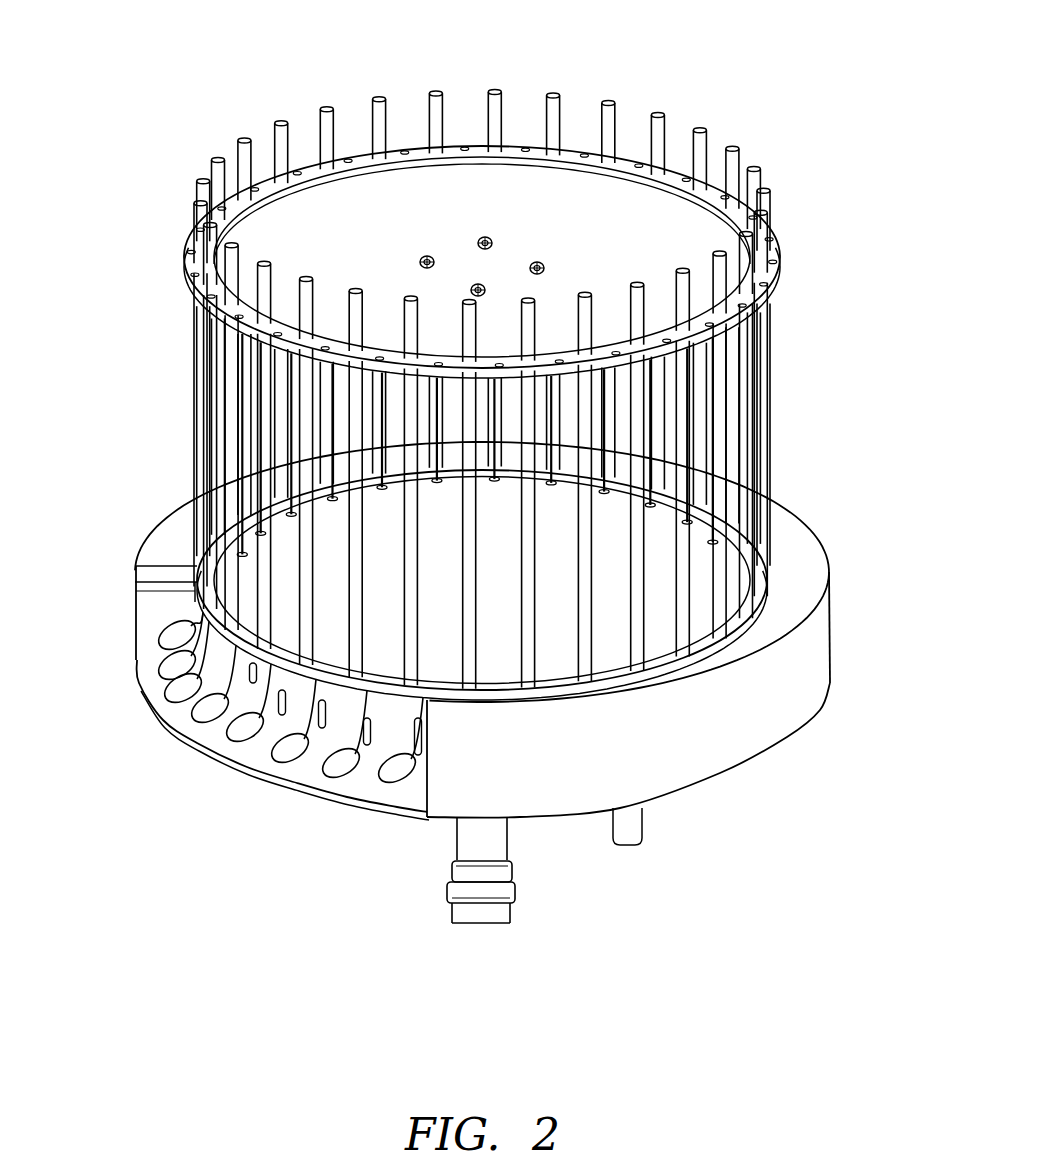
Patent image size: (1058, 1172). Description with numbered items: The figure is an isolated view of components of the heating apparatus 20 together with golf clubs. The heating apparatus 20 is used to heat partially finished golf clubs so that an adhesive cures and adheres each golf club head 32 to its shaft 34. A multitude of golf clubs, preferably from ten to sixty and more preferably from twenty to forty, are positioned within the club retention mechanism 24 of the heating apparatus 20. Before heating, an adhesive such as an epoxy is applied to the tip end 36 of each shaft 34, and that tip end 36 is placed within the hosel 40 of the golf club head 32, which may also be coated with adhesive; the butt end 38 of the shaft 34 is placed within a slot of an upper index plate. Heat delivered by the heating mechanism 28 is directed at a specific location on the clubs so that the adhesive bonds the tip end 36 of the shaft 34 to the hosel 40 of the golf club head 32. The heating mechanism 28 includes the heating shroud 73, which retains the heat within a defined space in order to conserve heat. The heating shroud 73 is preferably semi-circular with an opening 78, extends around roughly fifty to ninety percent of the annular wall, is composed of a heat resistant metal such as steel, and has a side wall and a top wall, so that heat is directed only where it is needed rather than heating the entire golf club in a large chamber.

The heating apparatus 20 is at (851, 123).
The club retention mechanism 24 is at (627, 152).
The heating mechanism 28 is at (490, 845).
The golf club head 32 is at (330, 763).
The shaft 34 is at (265, 748).
The tip end 36 is at (378, 698).
The butt end 38 is at (262, 472).
The hosel 40 is at (362, 748).
The heating shroud 73 is at (757, 727).
The opening 78 is at (165, 602).